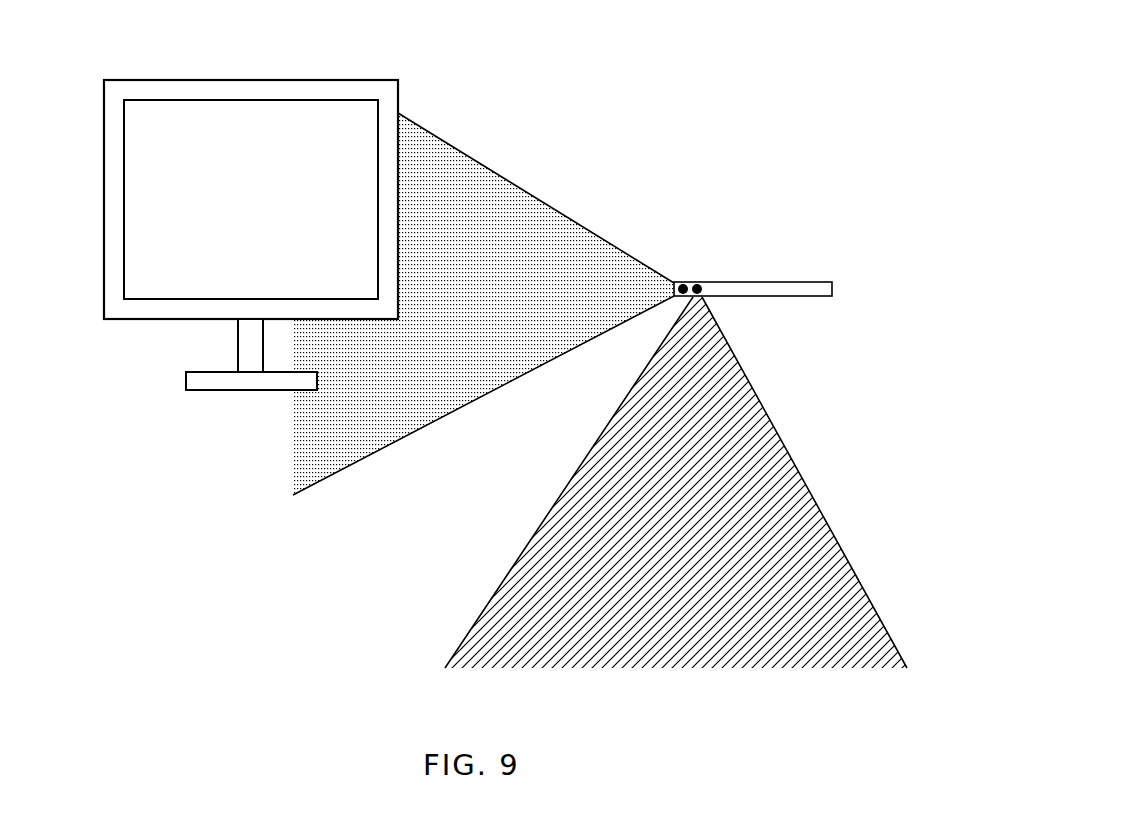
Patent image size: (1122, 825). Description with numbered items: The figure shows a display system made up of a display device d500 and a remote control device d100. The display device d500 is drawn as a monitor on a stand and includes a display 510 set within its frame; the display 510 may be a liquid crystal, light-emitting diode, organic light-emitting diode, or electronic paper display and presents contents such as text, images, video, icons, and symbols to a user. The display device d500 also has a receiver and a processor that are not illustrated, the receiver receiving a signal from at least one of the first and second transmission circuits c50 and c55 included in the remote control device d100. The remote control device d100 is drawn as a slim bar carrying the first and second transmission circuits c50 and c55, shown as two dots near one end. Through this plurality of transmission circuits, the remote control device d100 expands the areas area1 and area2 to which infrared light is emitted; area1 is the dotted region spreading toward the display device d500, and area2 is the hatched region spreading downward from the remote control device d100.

The display device d500 is at (250, 80).
The display 510 is at (153, 218).
The remote control device d100 is at (764, 285).
The first transmission circuit c50 is at (684, 283).
The second transmission circuit c55 is at (698, 283).
The area area1 is at (483, 304).
The area area2 is at (676, 482).